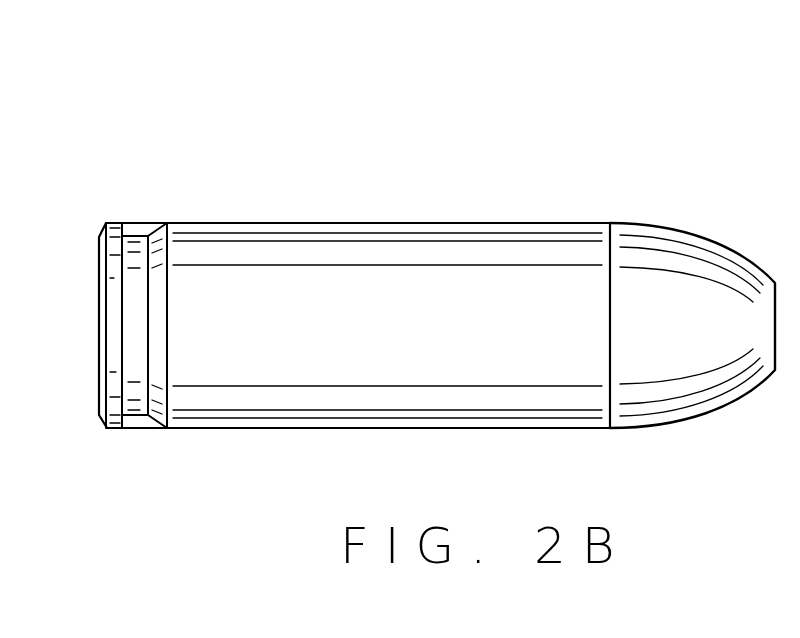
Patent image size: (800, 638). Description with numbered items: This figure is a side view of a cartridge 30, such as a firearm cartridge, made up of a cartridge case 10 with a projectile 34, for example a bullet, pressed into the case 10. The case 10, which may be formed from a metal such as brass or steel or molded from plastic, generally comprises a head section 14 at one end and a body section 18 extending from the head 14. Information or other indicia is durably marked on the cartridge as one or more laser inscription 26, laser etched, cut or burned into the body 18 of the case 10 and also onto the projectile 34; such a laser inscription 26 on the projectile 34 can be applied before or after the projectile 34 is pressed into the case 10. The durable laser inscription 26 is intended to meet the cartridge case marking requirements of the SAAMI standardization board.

The cartridge case 10 is at (324, 112).
The head section 14 is at (190, 217).
The body section 18 is at (605, 215).
The laser inscription 26 is at (376, 364).
The cartridge 30 is at (566, 80).
The projectile 34 is at (683, 255).